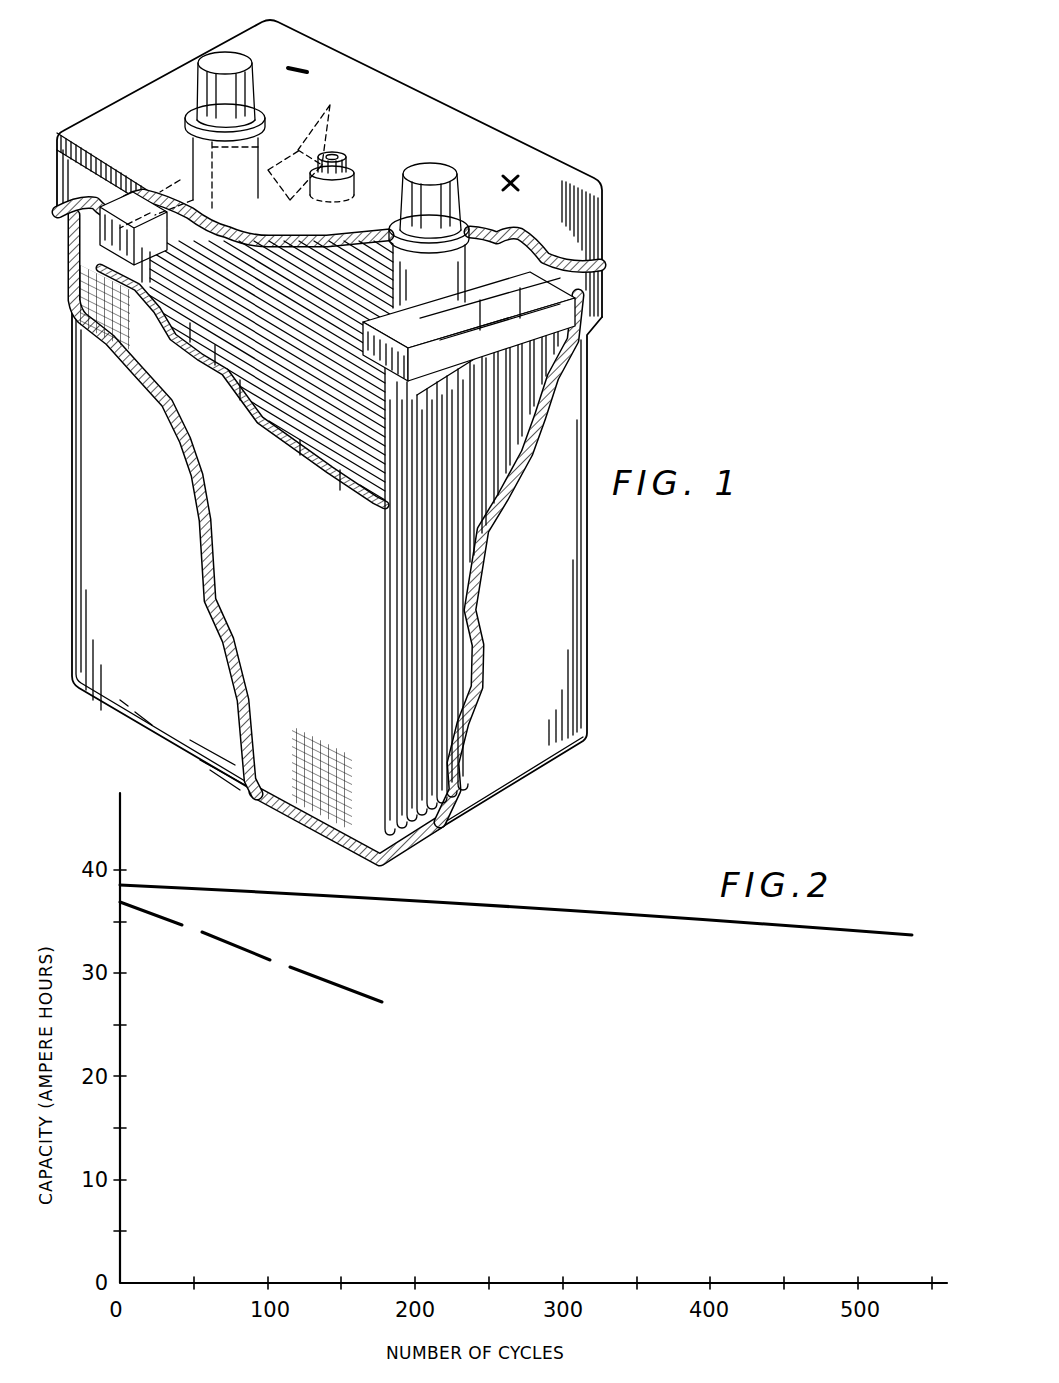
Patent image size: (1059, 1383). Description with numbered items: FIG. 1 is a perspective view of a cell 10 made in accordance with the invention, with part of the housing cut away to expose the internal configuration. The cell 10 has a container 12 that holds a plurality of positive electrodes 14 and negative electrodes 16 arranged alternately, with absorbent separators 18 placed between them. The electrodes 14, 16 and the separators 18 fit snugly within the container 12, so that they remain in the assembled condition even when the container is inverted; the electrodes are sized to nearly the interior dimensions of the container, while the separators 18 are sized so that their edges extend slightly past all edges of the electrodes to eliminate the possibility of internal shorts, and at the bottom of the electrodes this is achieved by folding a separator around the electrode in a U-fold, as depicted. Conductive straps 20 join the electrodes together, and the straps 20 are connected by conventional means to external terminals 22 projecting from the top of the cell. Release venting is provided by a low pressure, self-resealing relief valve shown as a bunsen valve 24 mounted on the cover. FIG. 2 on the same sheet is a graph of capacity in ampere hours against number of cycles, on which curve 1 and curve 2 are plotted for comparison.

In FIG. 1, the battery 10 is at (630, 200).
In FIG. 1, the container 12 is at (158, 584).
In FIG. 1, the plate straps 14 is at (470, 352).
In FIG. 1, the seals 16 is at (55, 270).
In FIG. 1, the plates 18 is at (412, 492).
In FIG. 1, the cover 20 is at (110, 218).
In FIG. 1, the terminals 22 is at (197, 85).
In FIG. 1, the vent cap 24 is at (348, 160).
In FIG. 2, the capacity curve of battery according to invention 1 is at (560, 915).
In FIG. 2, the capacity curve of conventional battery 2 is at (330, 980).